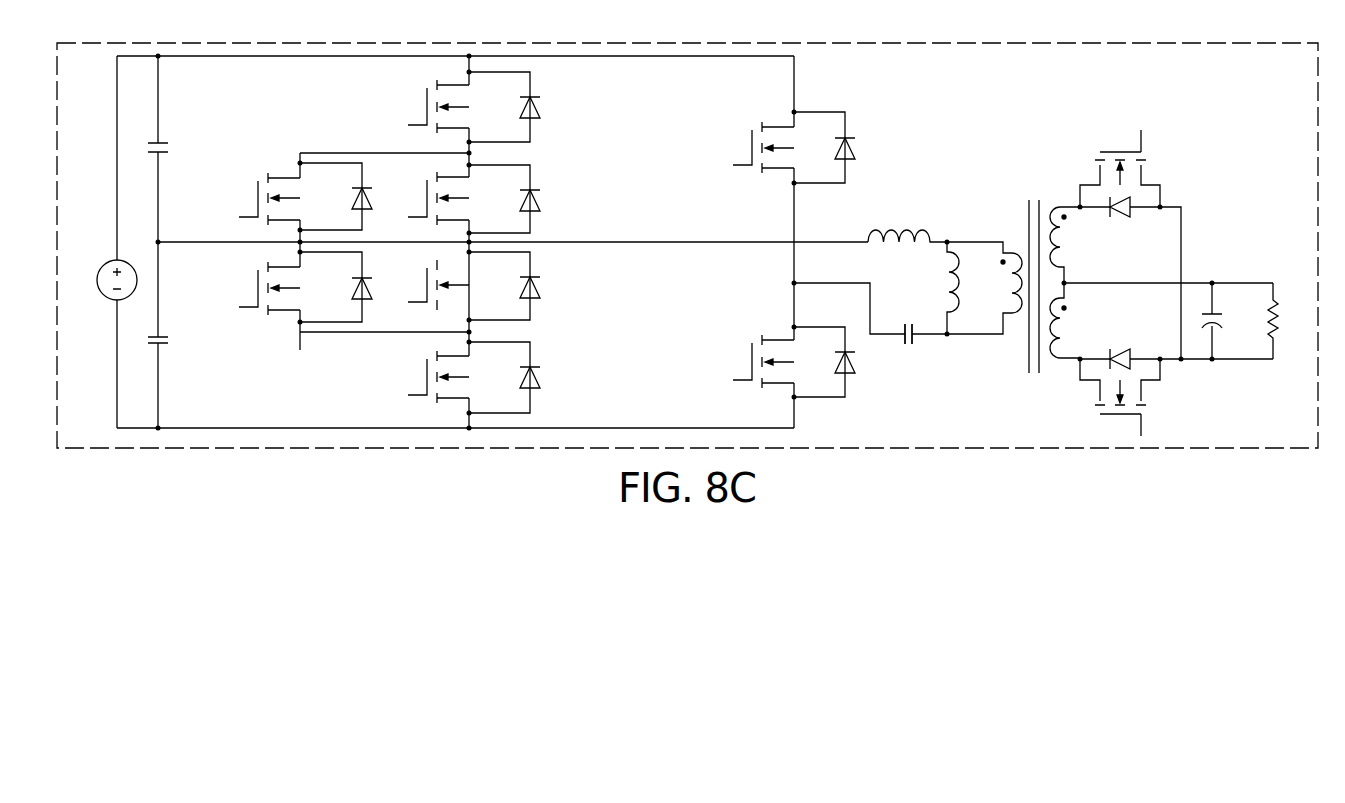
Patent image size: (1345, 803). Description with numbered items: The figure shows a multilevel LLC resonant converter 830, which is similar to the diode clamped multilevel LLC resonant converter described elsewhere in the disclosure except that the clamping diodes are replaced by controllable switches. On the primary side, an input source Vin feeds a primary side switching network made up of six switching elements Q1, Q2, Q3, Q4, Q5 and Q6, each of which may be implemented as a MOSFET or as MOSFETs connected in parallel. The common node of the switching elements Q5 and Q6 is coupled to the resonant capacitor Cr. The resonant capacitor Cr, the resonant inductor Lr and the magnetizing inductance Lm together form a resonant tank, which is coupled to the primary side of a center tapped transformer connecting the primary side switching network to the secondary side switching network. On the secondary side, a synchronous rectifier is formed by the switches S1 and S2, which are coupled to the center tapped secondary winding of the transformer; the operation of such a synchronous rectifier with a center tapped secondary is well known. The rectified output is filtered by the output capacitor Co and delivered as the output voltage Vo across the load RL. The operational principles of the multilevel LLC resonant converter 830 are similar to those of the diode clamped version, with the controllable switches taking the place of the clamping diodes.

The multilevel LLC resonant converter 830 is at (1278, 81).
The switching element Q1 is at (474, 107).
The switching element Q2 is at (474, 199).
The switching element Q3 is at (474, 286).
The switching element Q4 is at (474, 377).
The switching element Q5 is at (794, 147).
The switching element Q6 is at (794, 362).
The switch S1 is at (1112, 168).
The switch S2 is at (1112, 397).
The resonant inductor Lr is at (907, 222).
The magnetizing inductance Lm is at (966, 288).
The resonant capacitor Cr is at (903, 348).
The output capacitor Co is at (1222, 321).
The load resistor RL is at (1283, 321).
The input voltage source Vin is at (101, 280).
The output voltage Vo is at (1268, 267).